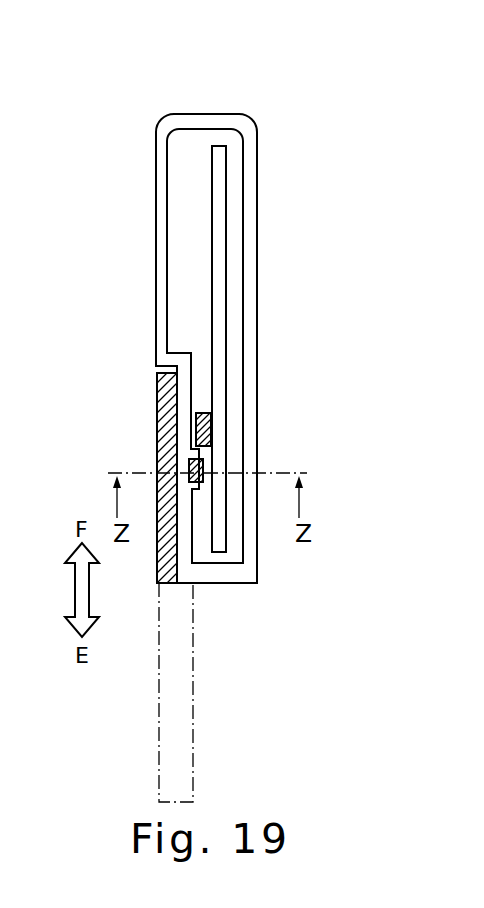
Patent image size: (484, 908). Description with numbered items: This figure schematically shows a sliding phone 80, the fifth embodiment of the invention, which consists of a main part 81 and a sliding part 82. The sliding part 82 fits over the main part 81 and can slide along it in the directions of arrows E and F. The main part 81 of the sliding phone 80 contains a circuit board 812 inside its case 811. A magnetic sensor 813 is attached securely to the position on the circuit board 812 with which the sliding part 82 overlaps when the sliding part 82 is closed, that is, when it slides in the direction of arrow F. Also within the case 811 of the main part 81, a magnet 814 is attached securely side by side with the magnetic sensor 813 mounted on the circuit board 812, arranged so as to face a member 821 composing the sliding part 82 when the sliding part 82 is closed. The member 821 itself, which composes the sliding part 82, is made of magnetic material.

The sliding phone 80 is at (288, 75).
The main part 81 is at (126, 123).
The case 811 is at (156, 183).
The circuit board 812 is at (212, 184).
The magnetic sensor 813 is at (202, 412).
The magnet 814 is at (203, 470).
The sliding part 82 is at (110, 397).
The member 821 is at (157, 443).